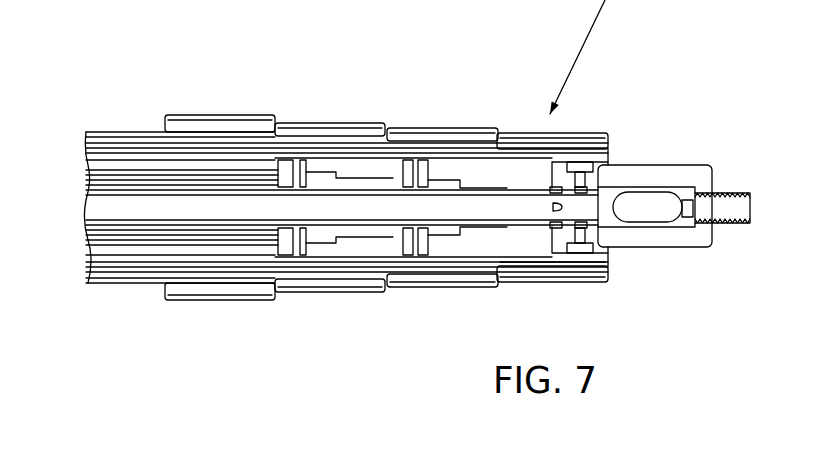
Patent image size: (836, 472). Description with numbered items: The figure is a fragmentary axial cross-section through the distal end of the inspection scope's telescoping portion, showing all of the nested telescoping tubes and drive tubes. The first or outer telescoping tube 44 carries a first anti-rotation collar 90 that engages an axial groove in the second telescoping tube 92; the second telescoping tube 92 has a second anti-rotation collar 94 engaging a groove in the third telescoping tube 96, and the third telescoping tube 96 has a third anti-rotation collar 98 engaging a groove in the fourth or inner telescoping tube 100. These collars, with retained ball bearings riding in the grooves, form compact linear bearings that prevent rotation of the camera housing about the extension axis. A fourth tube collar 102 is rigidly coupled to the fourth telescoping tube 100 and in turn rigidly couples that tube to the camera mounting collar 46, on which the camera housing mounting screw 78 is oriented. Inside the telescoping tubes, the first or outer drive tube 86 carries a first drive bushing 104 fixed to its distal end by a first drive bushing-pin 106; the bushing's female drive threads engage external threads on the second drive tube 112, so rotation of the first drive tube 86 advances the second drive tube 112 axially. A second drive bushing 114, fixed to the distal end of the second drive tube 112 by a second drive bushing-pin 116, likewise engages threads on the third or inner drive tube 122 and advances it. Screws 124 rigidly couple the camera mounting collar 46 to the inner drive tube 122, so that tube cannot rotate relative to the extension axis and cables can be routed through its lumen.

The first telescoping tube 44 is at (123, 132).
The camera mounting collar 46 is at (675, 178).
The camera housing mounting screw 78 is at (751, 207).
The first drive tube 86 is at (88, 283).
The first anti-rotation collar 90 is at (240, 115).
The second telescoping tube 92 is at (358, 138).
The second anti-rotation collar 94 is at (309, 124).
The third telescoping tube 96 is at (490, 177).
The third anti-rotation collar 98 is at (447, 128).
The fourth telescoping tube 100 is at (530, 260).
The fourth tube collar 102 is at (608, 277).
The first drive bushing 104 is at (363, 172).
The first drive bushing-pin 106 is at (297, 258).
The second drive tube 112 is at (88, 183).
The second drive bushing 114 is at (522, 173).
The second drive bushing-pin 116 is at (420, 248).
The third drive tube 122 is at (0, 170).
The screws 124 is at (590, 170).